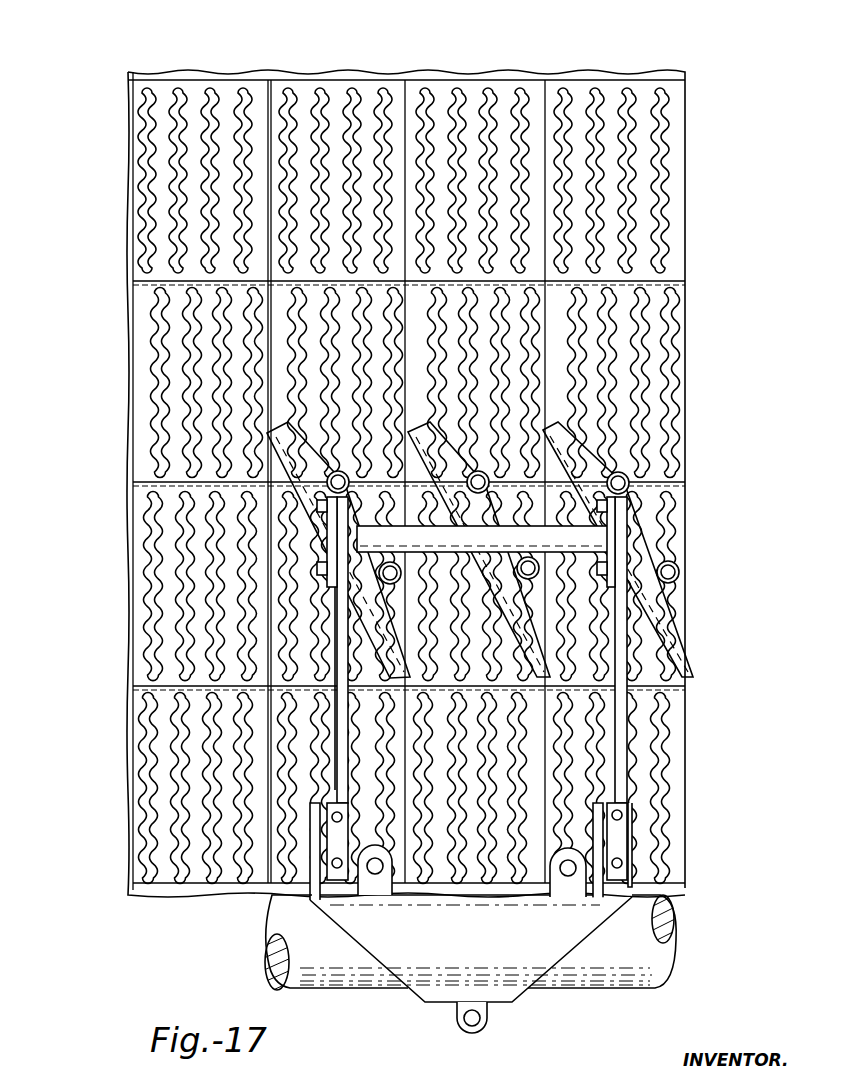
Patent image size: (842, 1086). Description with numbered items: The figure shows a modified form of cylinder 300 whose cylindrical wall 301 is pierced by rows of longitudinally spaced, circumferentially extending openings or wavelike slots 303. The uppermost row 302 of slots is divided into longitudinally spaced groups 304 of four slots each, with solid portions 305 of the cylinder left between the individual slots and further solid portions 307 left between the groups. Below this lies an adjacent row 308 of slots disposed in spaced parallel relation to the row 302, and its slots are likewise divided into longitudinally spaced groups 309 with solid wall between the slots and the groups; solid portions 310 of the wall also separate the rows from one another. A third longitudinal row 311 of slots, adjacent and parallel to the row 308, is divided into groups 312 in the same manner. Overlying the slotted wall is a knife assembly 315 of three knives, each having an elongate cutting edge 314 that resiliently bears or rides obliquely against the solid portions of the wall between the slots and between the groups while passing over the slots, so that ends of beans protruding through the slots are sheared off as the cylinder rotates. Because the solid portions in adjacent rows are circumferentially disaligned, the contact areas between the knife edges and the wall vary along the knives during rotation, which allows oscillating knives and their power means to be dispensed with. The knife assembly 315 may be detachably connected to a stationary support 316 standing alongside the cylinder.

The cylinder 300 is at (133, 75).
The cylindrical wall 301 is at (155, 72).
The row of slots 302 is at (134, 129).
The wavelike slots 303 is at (210, 100).
The groups of slots 304 is at (340, 78).
The solid portions of the cylinder 305 is at (228, 190).
The solid portions between groups 307 is at (262, 95).
The adjacent row of slots 308 is at (140, 364).
The groups of slots 309 is at (379, 380).
The solid portions between rows 310 is at (150, 292).
The longitudinal row of slots 311 is at (134, 573).
The groups of slots 312 is at (411, 584).
The cutting edge 314 is at (370, 622).
The knife assembly 315 is at (482, 539).
The stationary support 316 is at (268, 977).